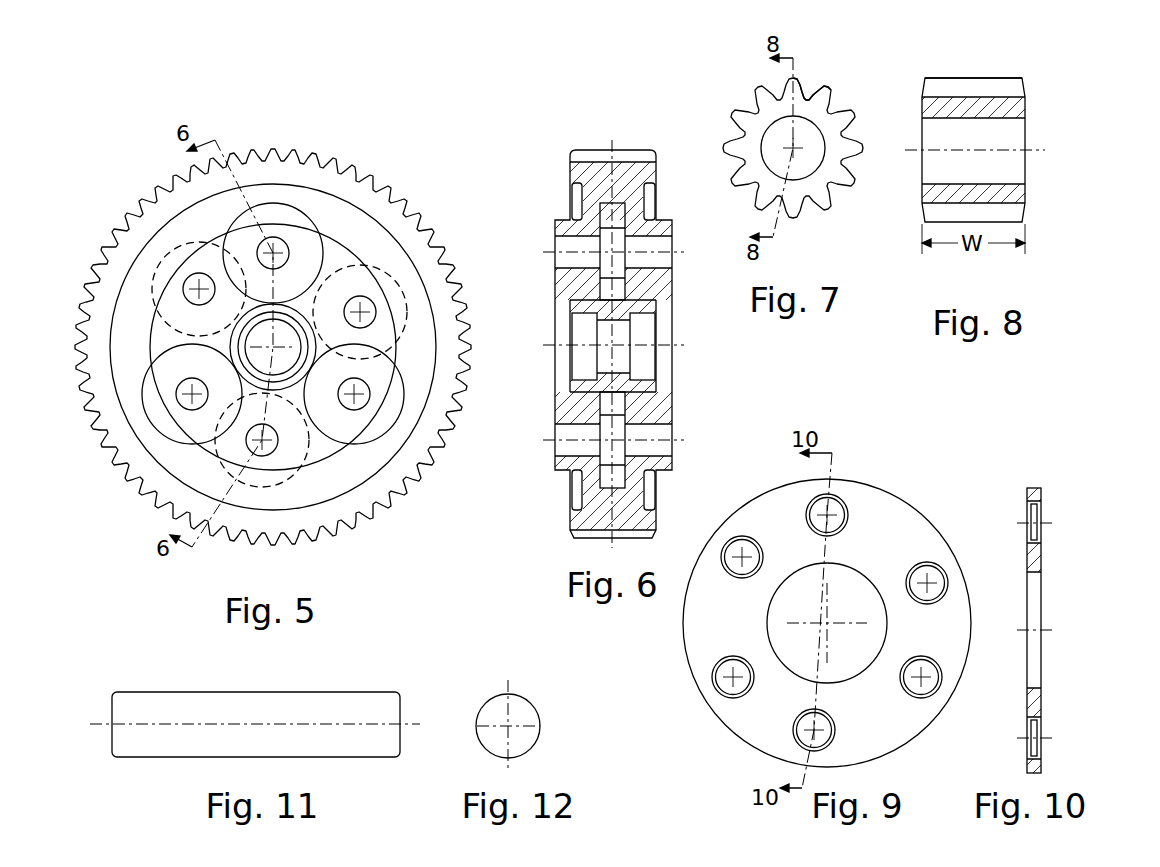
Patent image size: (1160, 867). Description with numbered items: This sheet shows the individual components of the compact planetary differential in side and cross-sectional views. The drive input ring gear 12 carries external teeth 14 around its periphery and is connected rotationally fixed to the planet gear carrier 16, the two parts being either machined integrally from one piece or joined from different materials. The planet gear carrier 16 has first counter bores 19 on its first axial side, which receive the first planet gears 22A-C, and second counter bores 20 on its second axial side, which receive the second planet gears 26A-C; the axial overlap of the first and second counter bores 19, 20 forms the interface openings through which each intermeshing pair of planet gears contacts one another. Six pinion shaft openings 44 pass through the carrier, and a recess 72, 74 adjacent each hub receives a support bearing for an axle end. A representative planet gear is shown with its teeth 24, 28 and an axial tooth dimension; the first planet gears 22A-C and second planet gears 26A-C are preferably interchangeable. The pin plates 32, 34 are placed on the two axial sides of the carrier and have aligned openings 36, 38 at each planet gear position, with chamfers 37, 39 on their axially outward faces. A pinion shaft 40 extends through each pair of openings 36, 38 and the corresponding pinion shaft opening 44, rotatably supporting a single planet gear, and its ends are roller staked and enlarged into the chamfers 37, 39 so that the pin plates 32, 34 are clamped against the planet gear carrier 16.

In FIG. 5, the drive input ring gear 12 is at (273, 330).
In FIG. 6, the drive input ring gear 12 is at (615, 323).
In FIG. 5, the external teeth 14 is at (345, 152).
In FIG. 6, the external teeth 14 is at (585, 158).
In FIG. 5, the planet gear carrier 16 is at (336, 470).
In FIG. 6, the planet gear carrier 16 is at (632, 195).
In FIG. 5, the first counter bores 19 is at (315, 218).
In FIG. 6, the first counter bores 19 is at (582, 300).
In FIG. 5, the second counter bores 20 is at (401, 286).
In FIG. 6, the second counter bores 20 is at (642, 393).
In FIG. 5, the pinion shaft openings 44 is at (288, 252).
In FIG. 6, the pinion shaft openings 44 is at (640, 237).
In FIG. 5, the recess 72 is at (246, 348).
In FIG. 6, the recess 72 is at (582, 380).
In FIG. 6, the recess 74 is at (640, 380).
In FIG. 7, the first planet gears 22A-C is at (857, 63).
In FIG. 8, the first planet gears 22A-C is at (991, 59).
In FIG. 7, the second planet gears 26A-C is at (825, 90).
In FIG. 8, the second planet gears 26A-C is at (962, 93).
In FIG. 7, the teeth 24 is at (811, 176).
In FIG. 8, the teeth 24 is at (998, 180).
In FIG. 7, the teeth 28 is at (838, 202).
In FIG. 8, the teeth 28 is at (1007, 210).
In FIG. 9, the first pin plate 32 is at (831, 617).
In FIG. 10, the first pin plate 32 is at (1076, 630).
In FIG. 9, the second pin plate 34 is at (906, 527).
In FIG. 10, the second pin plate 34 is at (1035, 495).
In FIG. 9, the openings 36 is at (840, 588).
In FIG. 9, the openings 38 is at (842, 506).
In FIG. 9, the chamfers 37 is at (830, 598).
In FIG. 9, the chamfers 39 is at (812, 500).
In FIG. 11, the pinion shaft 40 is at (352, 692).
In FIG. 12, the pinion shaft 40 is at (527, 700).